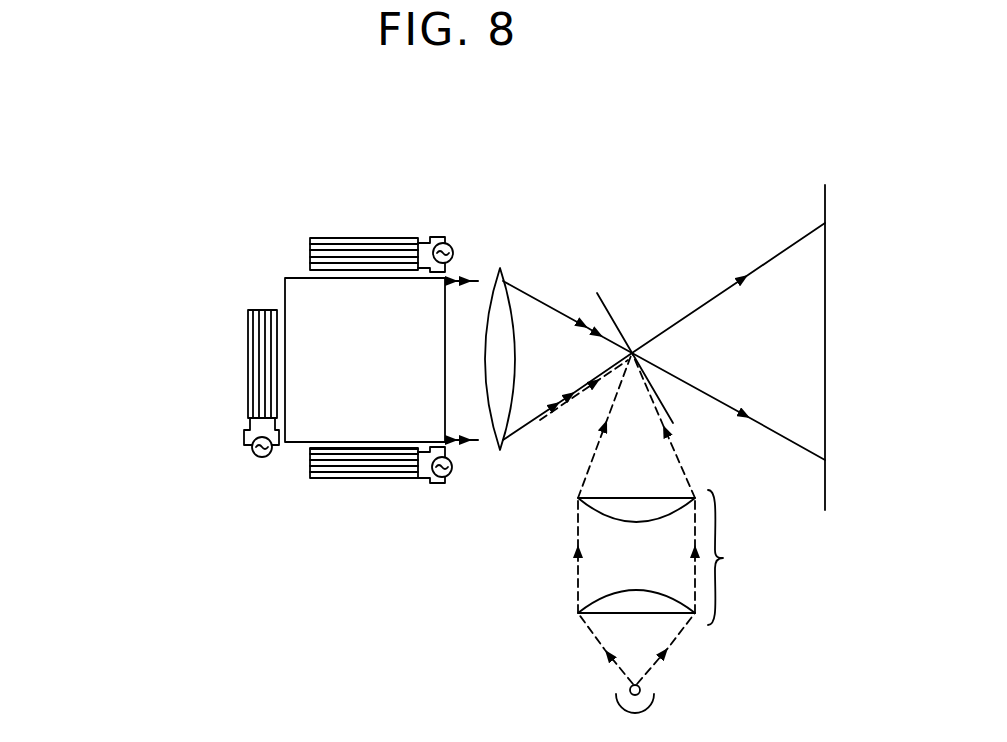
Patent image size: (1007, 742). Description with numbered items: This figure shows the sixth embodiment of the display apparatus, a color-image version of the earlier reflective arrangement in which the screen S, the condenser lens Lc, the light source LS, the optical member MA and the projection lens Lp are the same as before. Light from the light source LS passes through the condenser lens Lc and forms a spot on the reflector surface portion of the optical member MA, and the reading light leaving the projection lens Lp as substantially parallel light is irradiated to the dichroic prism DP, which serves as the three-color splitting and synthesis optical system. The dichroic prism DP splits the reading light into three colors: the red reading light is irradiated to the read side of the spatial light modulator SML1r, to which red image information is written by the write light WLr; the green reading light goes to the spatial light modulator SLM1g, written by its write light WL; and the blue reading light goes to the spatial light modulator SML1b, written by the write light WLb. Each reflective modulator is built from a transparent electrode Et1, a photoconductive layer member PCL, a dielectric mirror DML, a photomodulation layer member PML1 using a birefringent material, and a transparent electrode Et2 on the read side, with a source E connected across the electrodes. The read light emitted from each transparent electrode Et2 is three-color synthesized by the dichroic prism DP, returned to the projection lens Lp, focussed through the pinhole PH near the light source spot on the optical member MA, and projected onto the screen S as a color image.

The spatial light modulator (red) SML1r is at (390, 224).
The spatial light modulator (green) SLM1g is at (230, 362).
The spatial light modulator (blue) SML1b is at (397, 487).
The write light (red) WLr is at (365, 236).
The write light WL is at (232, 395).
The write light (blue) WLb is at (367, 487).
The photoconductive layer member PCL is at (310, 246).
The dielectric mirror DML is at (310, 252).
The photomodulation layer member PML1 is at (310, 258).
The transparent electrode Et1 is at (418, 243).
The transparent electrode Et2 is at (310, 265).
The AC power source E is at (453, 250).
The dichroic prism DP is at (312, 452).
The projection lens Lp is at (504, 280).
The pinhole PH is at (640, 337).
The optical member MA is at (676, 398).
The screen S is at (826, 200).
The condenser lens Lc is at (668, 489).
The light source LS is at (650, 693).